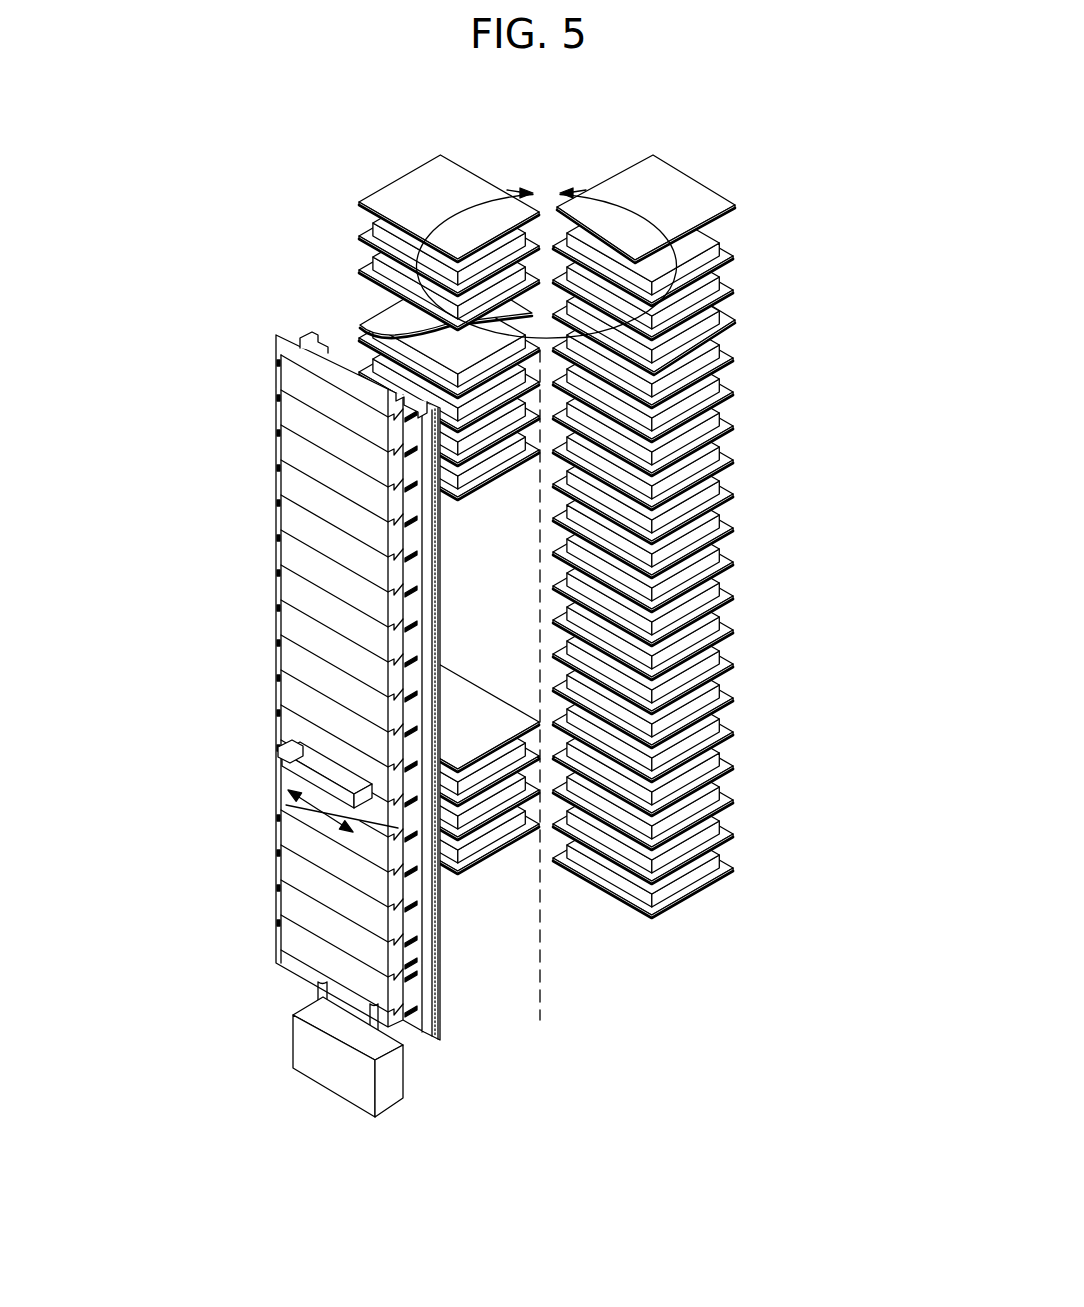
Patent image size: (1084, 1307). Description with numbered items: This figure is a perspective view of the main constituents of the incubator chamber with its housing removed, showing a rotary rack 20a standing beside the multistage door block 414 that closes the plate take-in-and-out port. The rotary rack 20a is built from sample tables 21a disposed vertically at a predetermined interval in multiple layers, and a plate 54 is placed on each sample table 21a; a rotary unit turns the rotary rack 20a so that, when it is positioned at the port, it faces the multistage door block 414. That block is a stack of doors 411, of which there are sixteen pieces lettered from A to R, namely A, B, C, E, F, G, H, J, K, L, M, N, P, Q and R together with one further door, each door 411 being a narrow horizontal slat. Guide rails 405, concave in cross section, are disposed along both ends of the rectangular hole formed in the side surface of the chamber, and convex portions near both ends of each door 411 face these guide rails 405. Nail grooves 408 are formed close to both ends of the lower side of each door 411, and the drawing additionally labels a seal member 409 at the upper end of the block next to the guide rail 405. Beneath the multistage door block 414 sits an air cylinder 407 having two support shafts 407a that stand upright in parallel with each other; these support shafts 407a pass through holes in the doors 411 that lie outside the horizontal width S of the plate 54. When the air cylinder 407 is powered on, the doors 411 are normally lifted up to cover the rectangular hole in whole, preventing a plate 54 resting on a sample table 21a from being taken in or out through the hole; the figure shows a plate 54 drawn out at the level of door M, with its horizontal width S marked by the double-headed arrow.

The rotary rack 20a is at (576, 515).
The sample table 21a is at (722, 740).
The plate 54 is at (360, 205).
The guide rail 405 is at (320, 342).
The seal member 409 is at (300, 338).
The door 411 is at (263, 686).
The multistage door block 414 is at (439, 668).
The nail groove 408 is at (416, 902).
The support shaft 407a is at (314, 990).
The air cylinder 407 is at (337, 1063).
The horizontal width of the plate S is at (283, 796).
The door A is at (347, 388).
The door B is at (347, 423).
The door C is at (347, 458).
The door E is at (347, 528).
The door F is at (347, 563).
The door G is at (347, 598).
The door H is at (347, 633).
The door J is at (347, 668).
The door K is at (347, 703).
The door L is at (347, 738).
The door M is at (388, 835).
The door N is at (347, 843).
The door P is at (347, 878).
The door Q is at (347, 913).
The door R is at (347, 948).